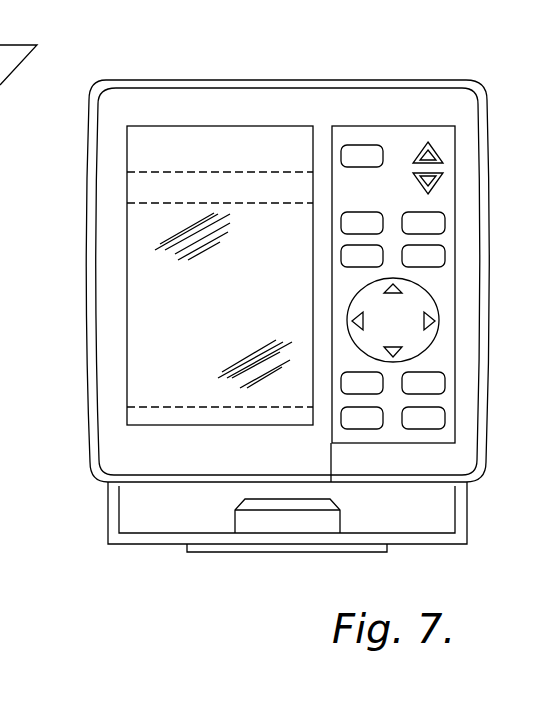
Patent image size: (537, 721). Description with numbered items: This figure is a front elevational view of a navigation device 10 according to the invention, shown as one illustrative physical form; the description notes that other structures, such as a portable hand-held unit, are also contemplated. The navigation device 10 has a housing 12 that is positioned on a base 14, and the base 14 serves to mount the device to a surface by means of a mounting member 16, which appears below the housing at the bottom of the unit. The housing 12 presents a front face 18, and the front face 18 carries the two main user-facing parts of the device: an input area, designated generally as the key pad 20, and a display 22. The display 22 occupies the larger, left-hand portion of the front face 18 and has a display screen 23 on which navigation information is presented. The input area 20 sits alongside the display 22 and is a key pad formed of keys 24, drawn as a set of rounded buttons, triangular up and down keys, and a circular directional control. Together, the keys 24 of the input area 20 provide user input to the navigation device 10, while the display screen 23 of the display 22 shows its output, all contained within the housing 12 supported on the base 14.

The navigation device 10 is at (282, 70).
The housing 12 is at (412, 80).
The base 14 is at (462, 512).
The mounting member 16 is at (288, 523).
The front face 18 is at (202, 102).
The input area 20 is at (397, 157).
The display 22 is at (143, 311).
The display screen 23 is at (229, 343).
The keys 24 is at (440, 253).